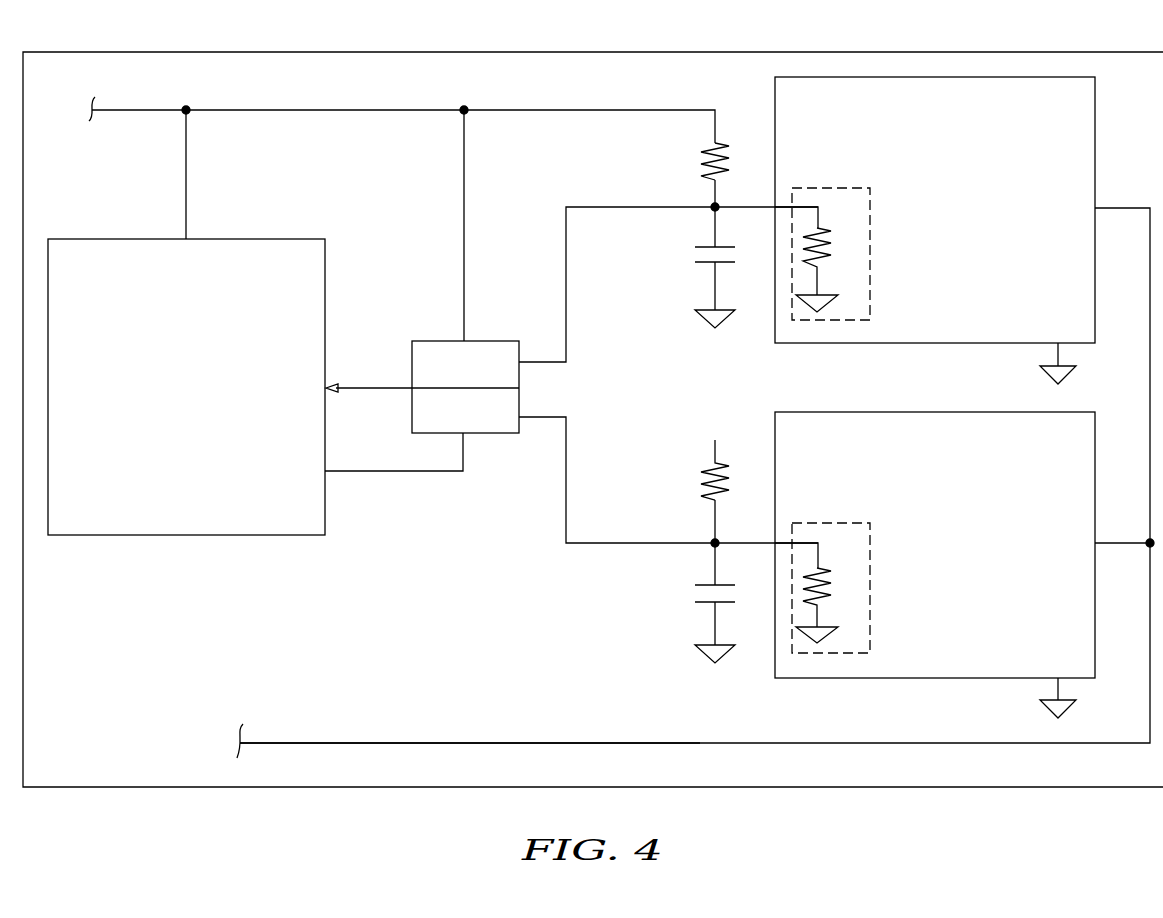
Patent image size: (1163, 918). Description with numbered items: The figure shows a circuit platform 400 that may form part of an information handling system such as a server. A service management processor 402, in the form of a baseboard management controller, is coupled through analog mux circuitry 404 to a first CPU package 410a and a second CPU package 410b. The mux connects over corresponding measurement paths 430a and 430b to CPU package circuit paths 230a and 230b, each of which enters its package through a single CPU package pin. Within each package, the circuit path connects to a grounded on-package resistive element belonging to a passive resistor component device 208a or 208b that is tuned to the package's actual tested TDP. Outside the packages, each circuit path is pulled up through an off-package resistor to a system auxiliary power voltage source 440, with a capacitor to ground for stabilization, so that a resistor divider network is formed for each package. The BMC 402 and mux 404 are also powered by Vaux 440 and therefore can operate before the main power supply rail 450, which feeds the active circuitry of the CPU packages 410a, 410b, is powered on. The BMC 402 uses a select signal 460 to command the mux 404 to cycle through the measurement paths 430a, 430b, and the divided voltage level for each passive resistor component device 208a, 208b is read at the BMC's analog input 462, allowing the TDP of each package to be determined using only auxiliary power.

The circuit platform 400 is at (977, 52).
The service management processor 402 is at (222, 239).
The analog mux circuitry 404 is at (485, 340).
The select signal 460 is at (352, 471).
The analog input 462 is at (355, 388).
The system auxiliary power voltage source 440 is at (712, 120).
The first measurement path 430a is at (566, 285).
The second measurement path 430b is at (566, 493).
The first CPU package circuit path 230a is at (782, 207).
The second CPU package circuit path 230b is at (782, 543).
The first passive resistor component device 208a is at (870, 297).
The second passive resistor component device 208b is at (870, 632).
The first CPU package 410a is at (880, 343).
The second CPU package 410b is at (880, 678).
The main power supply rail 450 is at (438, 742).